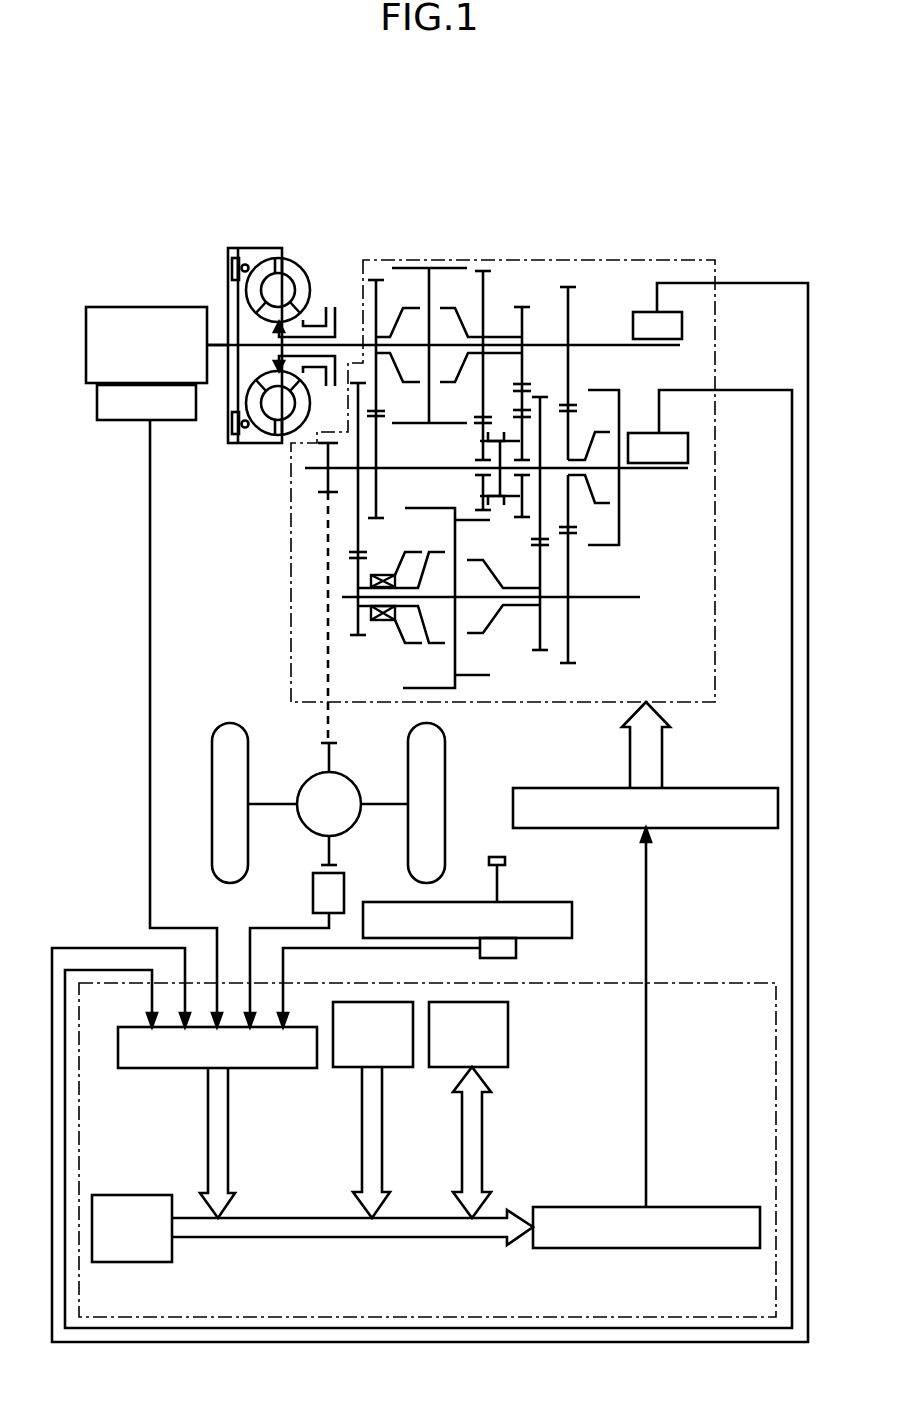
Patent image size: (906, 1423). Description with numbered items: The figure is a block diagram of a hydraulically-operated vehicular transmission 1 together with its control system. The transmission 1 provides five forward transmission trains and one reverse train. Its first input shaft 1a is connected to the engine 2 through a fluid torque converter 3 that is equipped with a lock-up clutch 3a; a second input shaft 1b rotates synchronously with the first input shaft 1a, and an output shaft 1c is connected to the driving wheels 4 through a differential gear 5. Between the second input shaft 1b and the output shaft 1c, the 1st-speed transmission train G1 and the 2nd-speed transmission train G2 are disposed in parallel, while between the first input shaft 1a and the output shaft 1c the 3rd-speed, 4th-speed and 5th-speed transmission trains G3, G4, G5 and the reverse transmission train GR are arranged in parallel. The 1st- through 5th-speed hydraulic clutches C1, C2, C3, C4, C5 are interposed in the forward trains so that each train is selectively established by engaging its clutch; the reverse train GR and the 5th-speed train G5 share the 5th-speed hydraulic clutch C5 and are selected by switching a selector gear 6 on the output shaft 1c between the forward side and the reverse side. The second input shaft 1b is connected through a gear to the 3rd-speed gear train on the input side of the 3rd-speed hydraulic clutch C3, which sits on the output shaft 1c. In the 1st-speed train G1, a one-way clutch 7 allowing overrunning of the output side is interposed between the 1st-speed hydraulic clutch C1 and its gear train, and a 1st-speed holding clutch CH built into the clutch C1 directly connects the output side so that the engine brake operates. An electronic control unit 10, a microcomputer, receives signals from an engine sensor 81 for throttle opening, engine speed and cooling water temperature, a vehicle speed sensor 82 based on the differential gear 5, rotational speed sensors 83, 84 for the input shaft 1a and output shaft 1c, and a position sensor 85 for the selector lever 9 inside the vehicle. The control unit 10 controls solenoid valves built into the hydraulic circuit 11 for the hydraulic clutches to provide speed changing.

The hydraulically-operated vehicular transmission 1 is at (604, 262).
The first input shaft 1a is at (585, 344).
The second input shaft 1b is at (612, 600).
The output shaft 1c is at (440, 468).
The engine 2 is at (172, 306).
The fluid torque converter 3 is at (306, 258).
The lock-up clutch 3a is at (240, 262).
The driving wheels 4 is at (215, 782).
The differential gear 5 is at (308, 790).
The selector gear 6 is at (497, 503).
The one-way clutch 7 is at (386, 622).
The engine sensor 81 is at (115, 421).
The vehicle speed sensor 82 is at (312, 893).
The rotational speed sensor 83 is at (643, 311).
The rotational speed sensor 84 is at (637, 432).
The position sensor 85 is at (518, 950).
The selector lever 9 is at (500, 890).
The electronic control unit 10 is at (722, 982).
The hydraulic circuit 11 is at (730, 787).
The 1st-speed hydraulic clutch C1 is at (417, 547).
The 2nd-speed hydraulic clutch C2 is at (489, 678).
The 3rd-speed hydraulic clutch C3 is at (622, 548).
The 4th-speed hydraulic clutch C4 is at (406, 266).
The 5th-speed hydraulic clutch C5 is at (450, 266).
The 1st-speed holding clutch CH is at (436, 652).
The 1st-speed transmission train G1 is at (358, 640).
The 2nd-speed transmission train G2 is at (540, 655).
The 3rd-speed transmission train G3 is at (569, 284).
The 4th-speed transmission train G4 is at (375, 276).
The 5th-speed transmission train G5 is at (484, 268).
The reverse transmission train GR is at (523, 304).